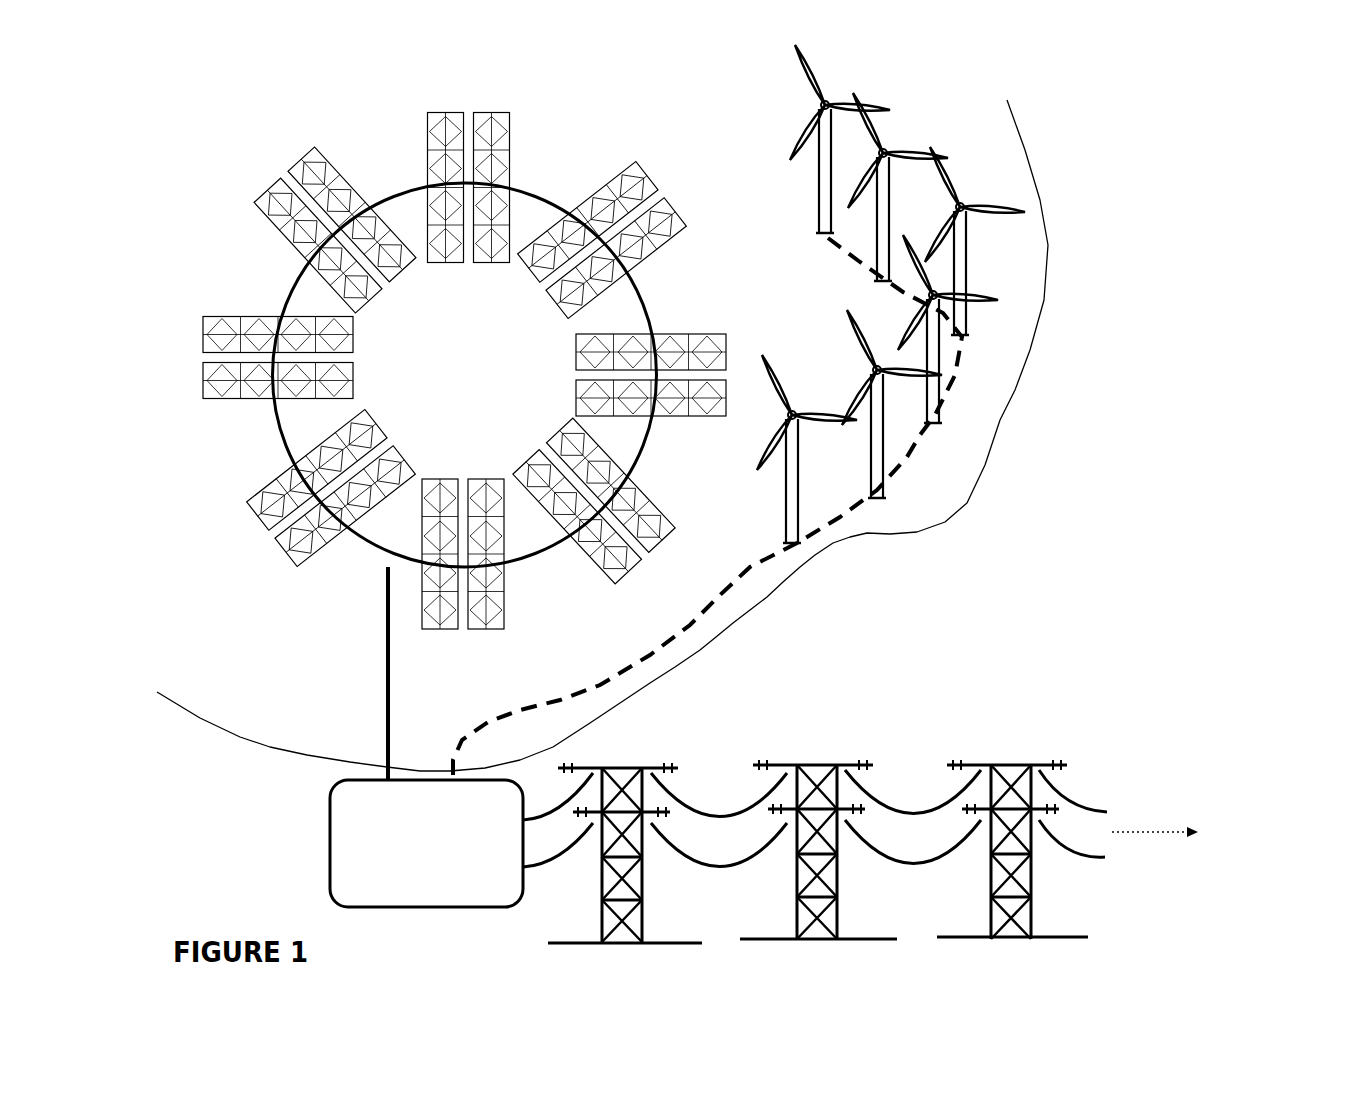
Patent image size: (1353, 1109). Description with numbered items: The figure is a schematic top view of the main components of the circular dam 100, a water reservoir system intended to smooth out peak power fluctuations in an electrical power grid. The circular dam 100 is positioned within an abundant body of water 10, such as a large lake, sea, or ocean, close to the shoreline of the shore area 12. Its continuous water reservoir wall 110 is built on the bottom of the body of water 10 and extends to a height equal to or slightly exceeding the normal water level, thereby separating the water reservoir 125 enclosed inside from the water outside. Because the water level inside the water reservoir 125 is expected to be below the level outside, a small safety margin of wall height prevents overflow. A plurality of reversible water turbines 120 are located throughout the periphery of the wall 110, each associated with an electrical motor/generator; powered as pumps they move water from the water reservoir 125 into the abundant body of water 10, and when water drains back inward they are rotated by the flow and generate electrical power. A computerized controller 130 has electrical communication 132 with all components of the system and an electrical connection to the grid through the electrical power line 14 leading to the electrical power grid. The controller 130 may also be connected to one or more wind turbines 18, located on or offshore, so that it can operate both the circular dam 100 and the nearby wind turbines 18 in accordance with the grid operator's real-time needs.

The abundant body of water 10 is at (616, 107).
The circular dam 100 is at (287, 147).
The water reservoir wall 110 is at (653, 317).
The reversible water turbines 120 is at (648, 507).
The water reservoir 125 is at (492, 384).
The electrical communication 132 is at (388, 710).
The computerized controller 130 is at (432, 852).
The wind turbines 18 is at (997, 173).
The shore area 12 is at (1201, 424).
The electrical power line 14 is at (895, 702).